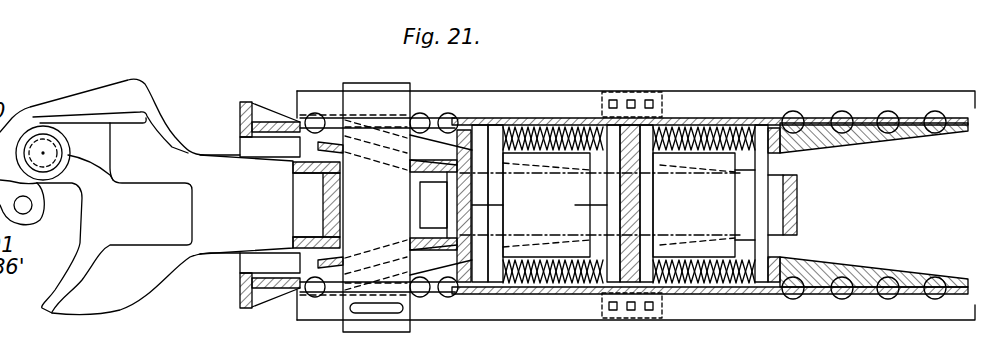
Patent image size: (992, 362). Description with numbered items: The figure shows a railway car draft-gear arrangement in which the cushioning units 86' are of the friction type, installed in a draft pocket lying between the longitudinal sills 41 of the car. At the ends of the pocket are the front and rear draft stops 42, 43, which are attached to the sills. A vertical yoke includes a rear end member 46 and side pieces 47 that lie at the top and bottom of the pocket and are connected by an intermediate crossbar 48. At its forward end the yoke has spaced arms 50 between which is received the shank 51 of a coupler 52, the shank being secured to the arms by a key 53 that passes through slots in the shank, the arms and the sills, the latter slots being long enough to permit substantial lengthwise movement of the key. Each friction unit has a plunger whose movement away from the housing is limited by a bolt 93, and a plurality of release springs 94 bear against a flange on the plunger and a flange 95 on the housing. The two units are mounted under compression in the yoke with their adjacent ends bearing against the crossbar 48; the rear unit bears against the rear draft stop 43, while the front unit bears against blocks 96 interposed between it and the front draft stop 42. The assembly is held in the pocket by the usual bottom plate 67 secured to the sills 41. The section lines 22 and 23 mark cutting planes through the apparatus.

The section line 22- 22 is at (562, 90).
The section line / arrows 23 is at (495, 175).
The longitudinal sills 41 is at (722, 98).
The front draft stop 42 is at (453, 112).
The rear draft stop 43 is at (790, 142).
The rear end member 46 is at (797, 209).
The side pieces 47 is at (777, 188).
The crossbar 48 is at (632, 211).
The spaced arms 50 is at (318, 147).
The shank 51 is at (270, 204).
The coupler 52 is at (173, 133).
The key 53 is at (358, 327).
The bottom plate 67 is at (633, 314).
The cushioning units 86' is at (684, 170).
The bolt 93 is at (616, 126).
The release springs 94 is at (537, 123).
The flange 95 is at (503, 222).
The blocks 96 is at (480, 115).